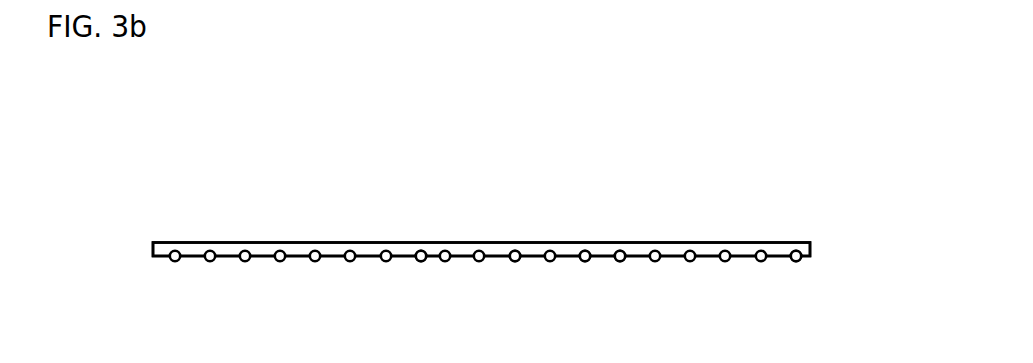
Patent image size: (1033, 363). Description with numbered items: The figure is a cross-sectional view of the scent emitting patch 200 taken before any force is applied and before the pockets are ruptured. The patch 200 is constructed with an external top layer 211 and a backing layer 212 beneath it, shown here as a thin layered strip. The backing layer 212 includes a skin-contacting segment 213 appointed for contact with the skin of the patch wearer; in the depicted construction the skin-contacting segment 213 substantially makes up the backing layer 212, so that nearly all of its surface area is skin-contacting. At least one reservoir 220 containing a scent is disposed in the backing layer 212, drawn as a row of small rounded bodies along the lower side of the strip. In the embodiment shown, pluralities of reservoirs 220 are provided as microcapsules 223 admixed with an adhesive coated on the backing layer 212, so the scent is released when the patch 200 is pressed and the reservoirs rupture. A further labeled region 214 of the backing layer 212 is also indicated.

The scent emitting patch 200 is at (165, 228).
The external top layer 211 is at (747, 241).
The backing layer 212 is at (637, 257).
The skin-contacting segment 213 is at (525, 257).
The light source 214 is at (785, 257).
The reservoir 220 is at (410, 271).
The microcapsules 223 is at (427, 252).